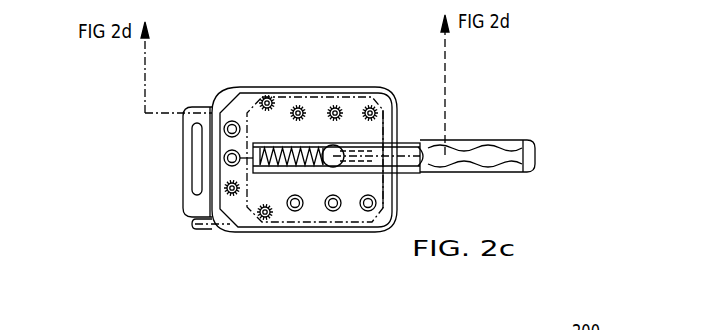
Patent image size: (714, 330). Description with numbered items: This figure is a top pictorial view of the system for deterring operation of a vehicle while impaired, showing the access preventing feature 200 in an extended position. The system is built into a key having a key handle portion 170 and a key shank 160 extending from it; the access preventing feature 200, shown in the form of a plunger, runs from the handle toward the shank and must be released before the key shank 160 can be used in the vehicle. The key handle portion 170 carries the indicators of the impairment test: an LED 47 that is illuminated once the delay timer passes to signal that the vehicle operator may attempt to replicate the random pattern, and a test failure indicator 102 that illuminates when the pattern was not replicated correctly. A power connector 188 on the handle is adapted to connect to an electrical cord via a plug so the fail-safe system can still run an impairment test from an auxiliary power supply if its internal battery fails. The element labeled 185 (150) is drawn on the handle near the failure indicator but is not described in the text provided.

The LED 47 is at (261, 97).
The key handle portion 170 is at (318, 87).
The access preventing feature 200 is at (418, 153).
The key shank 160 is at (495, 153).
The power connector 188 is at (188, 222).
The test failure indicator 102 is at (262, 218).
The roller pin 185 is at (282, 260).
The roller 150 is at (300, 212).